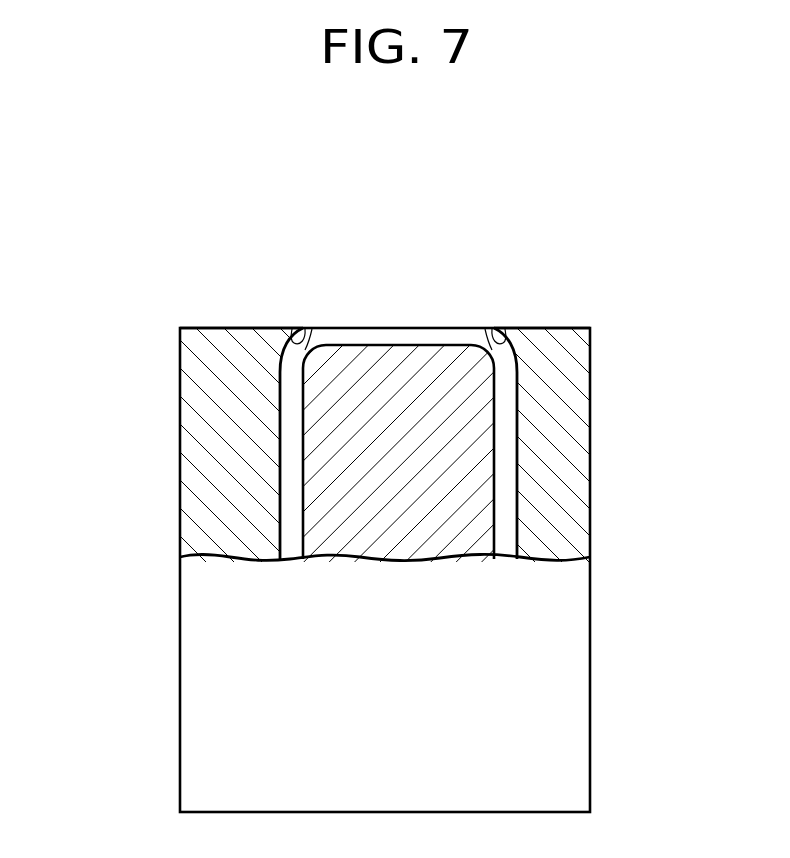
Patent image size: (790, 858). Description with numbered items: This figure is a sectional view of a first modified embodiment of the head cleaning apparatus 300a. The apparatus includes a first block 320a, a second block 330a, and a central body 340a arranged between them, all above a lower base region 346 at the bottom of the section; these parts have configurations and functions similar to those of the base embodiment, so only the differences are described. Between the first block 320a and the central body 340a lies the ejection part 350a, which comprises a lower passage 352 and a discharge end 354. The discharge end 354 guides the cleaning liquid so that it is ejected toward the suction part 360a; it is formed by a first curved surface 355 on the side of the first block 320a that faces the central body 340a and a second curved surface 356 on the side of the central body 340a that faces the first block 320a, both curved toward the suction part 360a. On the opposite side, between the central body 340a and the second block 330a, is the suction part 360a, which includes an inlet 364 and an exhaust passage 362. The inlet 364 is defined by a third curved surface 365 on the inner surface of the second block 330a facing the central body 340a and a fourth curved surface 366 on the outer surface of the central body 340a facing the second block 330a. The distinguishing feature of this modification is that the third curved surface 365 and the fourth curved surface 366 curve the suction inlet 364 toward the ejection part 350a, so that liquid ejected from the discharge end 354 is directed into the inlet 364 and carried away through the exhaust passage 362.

The head cleaning apparatus 300a is at (453, 187).
The first block 320a is at (568, 325).
The second block 330a is at (199, 325).
The central body 340a is at (391, 342).
The gate insulation layer 346 is at (302, 533).
The ejection part 350a is at (620, 443).
The second lower spacer 352 is at (591, 465).
The discharge end 354 is at (503, 356).
The first curved surface 355 is at (489, 330).
The second curved surface 356 is at (477, 347).
The suction part 360a is at (164, 443).
The exhaust passage 362 is at (290, 490).
The inlet 364 is at (297, 357).
The third curved surface 365 is at (299, 328).
The fourth curved surface 366 is at (310, 346).